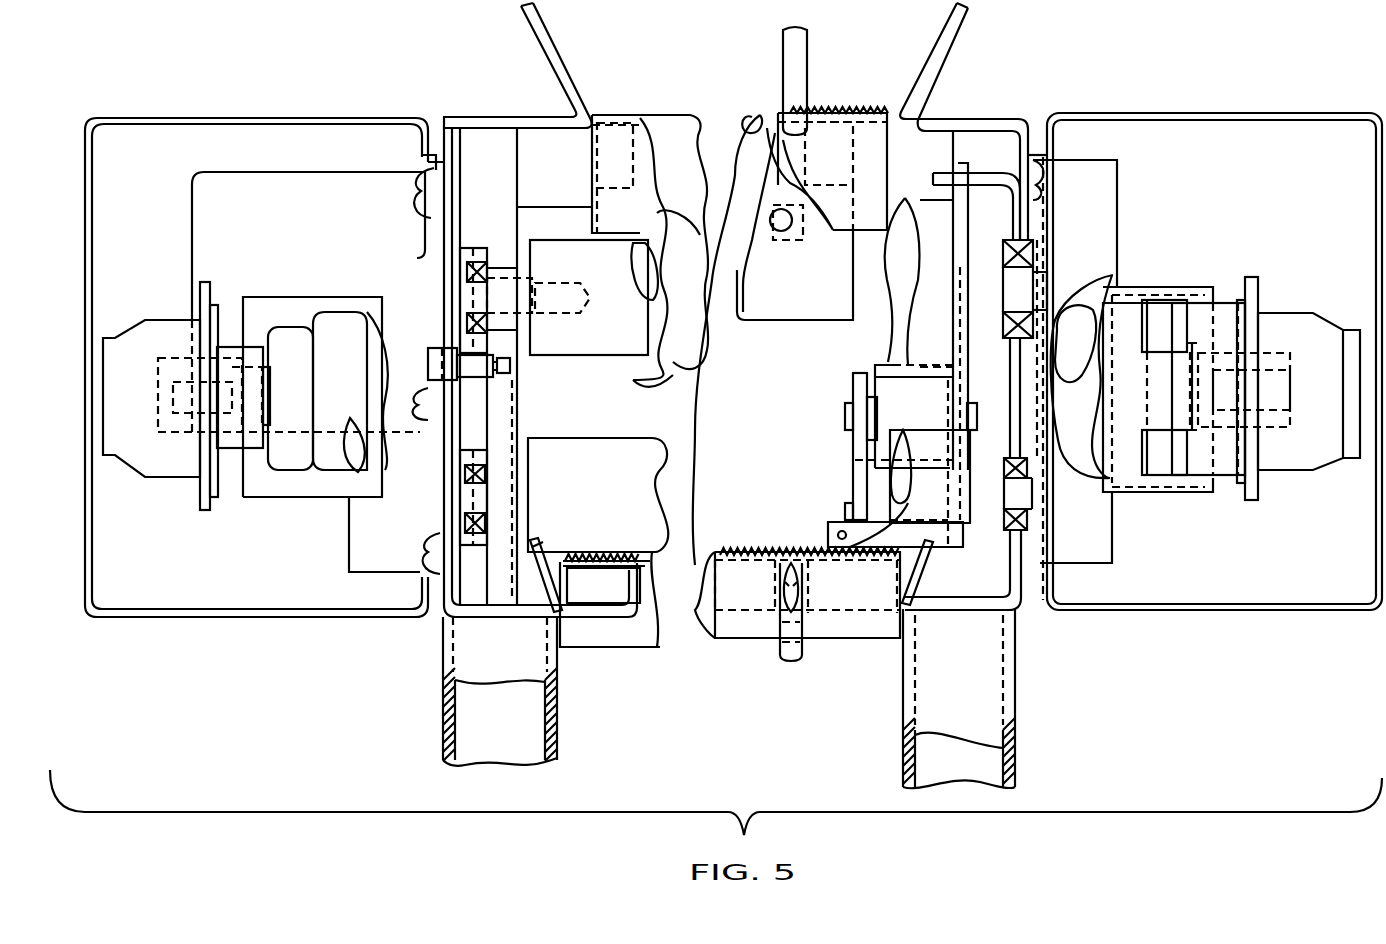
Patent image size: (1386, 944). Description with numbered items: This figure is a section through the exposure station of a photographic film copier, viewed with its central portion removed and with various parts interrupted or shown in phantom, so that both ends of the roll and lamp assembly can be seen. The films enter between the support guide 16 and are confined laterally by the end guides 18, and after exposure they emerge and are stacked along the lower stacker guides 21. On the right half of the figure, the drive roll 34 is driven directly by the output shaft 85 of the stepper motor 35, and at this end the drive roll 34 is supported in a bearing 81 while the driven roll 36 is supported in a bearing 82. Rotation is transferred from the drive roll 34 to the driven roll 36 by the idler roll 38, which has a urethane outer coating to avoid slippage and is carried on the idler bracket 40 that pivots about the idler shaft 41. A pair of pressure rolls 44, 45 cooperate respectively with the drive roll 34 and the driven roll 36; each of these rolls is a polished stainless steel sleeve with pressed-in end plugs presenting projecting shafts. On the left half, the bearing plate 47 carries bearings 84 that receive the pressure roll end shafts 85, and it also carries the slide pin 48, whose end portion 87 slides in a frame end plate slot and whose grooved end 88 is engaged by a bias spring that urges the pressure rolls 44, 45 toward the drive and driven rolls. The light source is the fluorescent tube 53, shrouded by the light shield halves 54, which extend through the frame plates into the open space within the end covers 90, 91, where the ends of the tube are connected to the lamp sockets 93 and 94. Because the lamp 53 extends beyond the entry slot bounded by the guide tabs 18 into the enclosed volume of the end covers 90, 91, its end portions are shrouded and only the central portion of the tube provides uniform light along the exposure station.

The support guide 16 is at (808, 50).
The end guides 18 is at (557, 50).
The lower stacker guides 21 is at (803, 658).
The drive roll 34 is at (900, 205).
The stepper motor 35 is at (192, 208).
The driven roll 36 is at (930, 430).
The idler roll 38 is at (885, 368).
The idler bracket 40 is at (852, 470).
The idler shaft 41 is at (845, 425).
The pressure roll 44 is at (643, 372).
The pressure roll 45 is at (592, 438).
The bearing plate 47 is at (470, 248).
The slide pin 48 is at (490, 378).
The fluorescent lamp or tube 53 is at (350, 312).
The light shield halves 54 is at (283, 498).
The bearing 81 is at (1036, 258).
The bearing 82 is at (1003, 512).
The bearings 84 is at (465, 322).
The output shaft / pressure roll end shafts 85 is at (500, 270).
The end portion 87 is at (430, 360).
The grooved end 88 is at (511, 367).
The end cover 90 is at (272, 618).
The end cover 91 is at (1228, 611).
The lamp socket 93 is at (172, 478).
The lamp socket 94 is at (1300, 472).